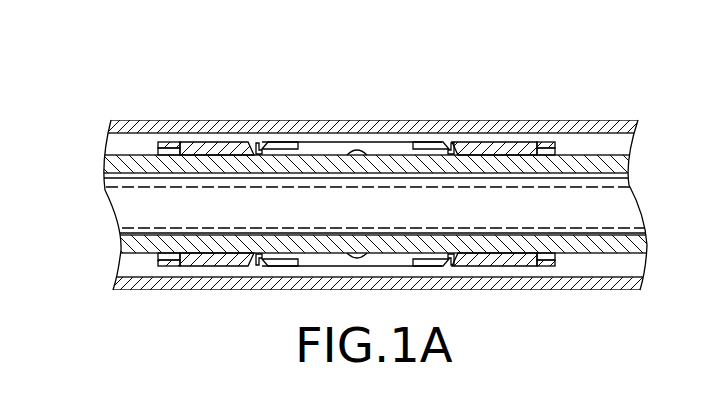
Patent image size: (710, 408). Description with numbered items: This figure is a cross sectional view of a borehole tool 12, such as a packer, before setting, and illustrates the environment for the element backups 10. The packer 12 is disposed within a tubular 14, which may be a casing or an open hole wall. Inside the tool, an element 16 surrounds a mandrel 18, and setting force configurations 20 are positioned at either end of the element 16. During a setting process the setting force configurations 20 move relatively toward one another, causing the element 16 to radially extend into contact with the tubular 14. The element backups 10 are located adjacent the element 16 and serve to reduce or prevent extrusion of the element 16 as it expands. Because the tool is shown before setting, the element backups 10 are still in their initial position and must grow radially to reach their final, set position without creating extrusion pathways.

The element backup 10 is at (257, 140).
The borehole tool 12 is at (205, 84).
The tubular 14 is at (322, 127).
The element 16 is at (387, 150).
The mandrel 18 is at (568, 163).
The setting force configurations 20 is at (178, 143).